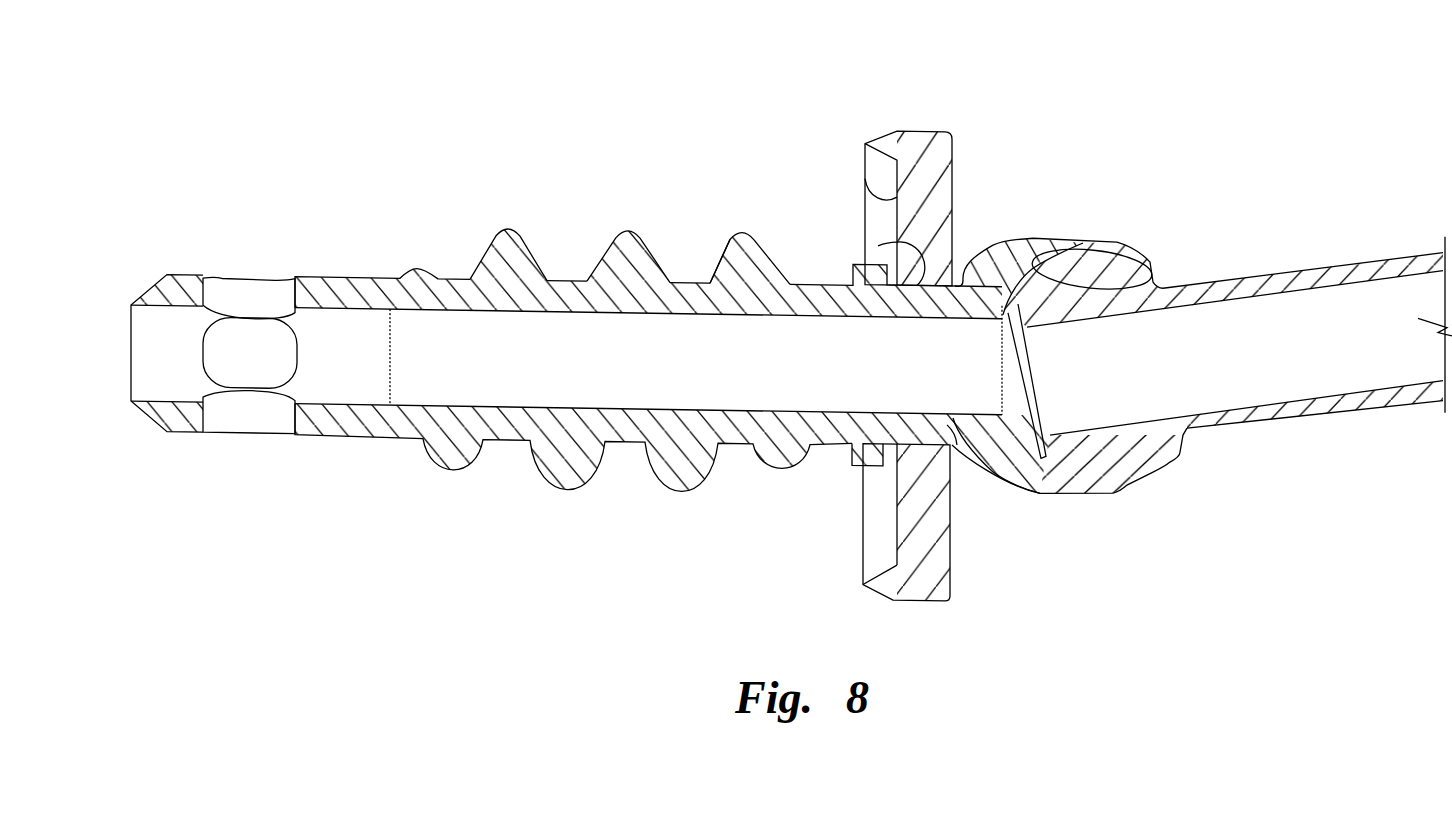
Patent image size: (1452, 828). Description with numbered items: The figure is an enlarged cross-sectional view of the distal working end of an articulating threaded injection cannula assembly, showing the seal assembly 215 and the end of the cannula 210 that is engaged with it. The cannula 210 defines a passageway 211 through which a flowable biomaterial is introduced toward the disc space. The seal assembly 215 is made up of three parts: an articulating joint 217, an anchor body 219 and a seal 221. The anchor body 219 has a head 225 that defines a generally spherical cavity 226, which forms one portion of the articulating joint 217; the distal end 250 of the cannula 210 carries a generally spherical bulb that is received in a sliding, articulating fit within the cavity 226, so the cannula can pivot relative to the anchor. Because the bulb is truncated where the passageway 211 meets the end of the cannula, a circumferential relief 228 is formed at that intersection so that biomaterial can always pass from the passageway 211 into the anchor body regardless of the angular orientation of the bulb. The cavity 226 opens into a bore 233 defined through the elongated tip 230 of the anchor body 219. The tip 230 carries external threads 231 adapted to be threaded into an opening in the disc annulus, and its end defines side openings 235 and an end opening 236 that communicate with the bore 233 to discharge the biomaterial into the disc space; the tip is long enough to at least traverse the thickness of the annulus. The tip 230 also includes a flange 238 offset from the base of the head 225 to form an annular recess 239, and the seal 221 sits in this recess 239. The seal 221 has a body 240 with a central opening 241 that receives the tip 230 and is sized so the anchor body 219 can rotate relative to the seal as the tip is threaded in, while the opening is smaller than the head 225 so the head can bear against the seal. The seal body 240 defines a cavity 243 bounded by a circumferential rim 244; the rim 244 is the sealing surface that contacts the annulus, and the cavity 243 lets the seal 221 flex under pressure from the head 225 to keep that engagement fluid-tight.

The cannula 210 is at (1293, 390).
The passageway 211 is at (1250, 287).
The seal assembly 215 is at (908, 160).
The articulating joint 217 is at (1110, 476).
The anchor body 219 is at (557, 483).
The seal 221 is at (887, 559).
The head 225 is at (1038, 224).
The spherical cavity 226 is at (1067, 263).
The circumferential relief 228 is at (1038, 480).
The elongated tip 230 is at (757, 245).
The external threads 231 is at (718, 246).
The bore 233 is at (577, 321).
The side openings 235 is at (253, 343).
The end opening 236 is at (130, 348).
The flange 238 is at (855, 455).
The annular recess 239 is at (893, 233).
The seal body 240 is at (930, 139).
The central opening 241 is at (970, 465).
The cavity 243 is at (865, 168).
The circumferential rim 244 is at (877, 573).
The distal end 250 is at (1162, 465).